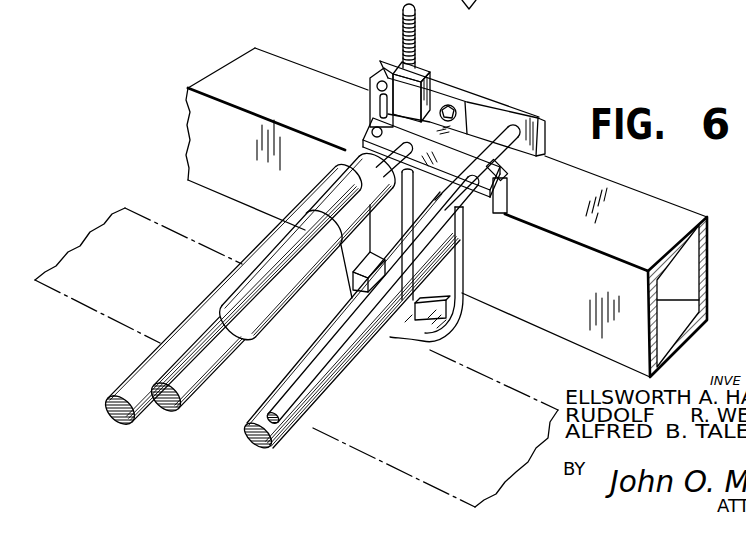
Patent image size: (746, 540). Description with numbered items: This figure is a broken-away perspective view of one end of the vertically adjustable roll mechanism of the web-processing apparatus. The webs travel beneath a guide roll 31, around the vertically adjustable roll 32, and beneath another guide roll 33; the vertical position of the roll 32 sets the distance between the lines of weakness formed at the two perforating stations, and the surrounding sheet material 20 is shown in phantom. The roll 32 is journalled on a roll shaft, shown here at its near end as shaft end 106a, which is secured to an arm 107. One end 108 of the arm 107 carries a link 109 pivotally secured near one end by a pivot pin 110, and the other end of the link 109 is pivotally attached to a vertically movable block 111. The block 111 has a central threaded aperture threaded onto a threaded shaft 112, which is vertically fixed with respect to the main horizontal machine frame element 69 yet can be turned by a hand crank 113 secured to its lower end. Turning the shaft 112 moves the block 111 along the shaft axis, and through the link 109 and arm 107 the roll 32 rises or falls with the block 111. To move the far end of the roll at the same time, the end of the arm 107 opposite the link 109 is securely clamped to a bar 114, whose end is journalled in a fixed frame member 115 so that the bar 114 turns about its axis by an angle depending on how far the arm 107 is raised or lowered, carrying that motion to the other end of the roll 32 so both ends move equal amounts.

The plate / sheet 20 is at (100, 317).
The guide roll 31 is at (300, 432).
The vertically adjustable roll 32 is at (198, 396).
The guide roll 33 is at (133, 386).
The main horizontal machine frame element 69 is at (653, 207).
The clamp bar 106a is at (428, 92).
The arm 107 is at (508, 180).
The end of arm 108 is at (367, 140).
The link 109 is at (385, 107).
The pivot pin 110 is at (372, 128).
The vertically movable block 111 is at (420, 74).
The threaded shaft 112 is at (403, 20).
The hand crank 113 is at (437, 322).
The bar 114 is at (288, 410).
The fixed frame member 115 is at (507, 110).